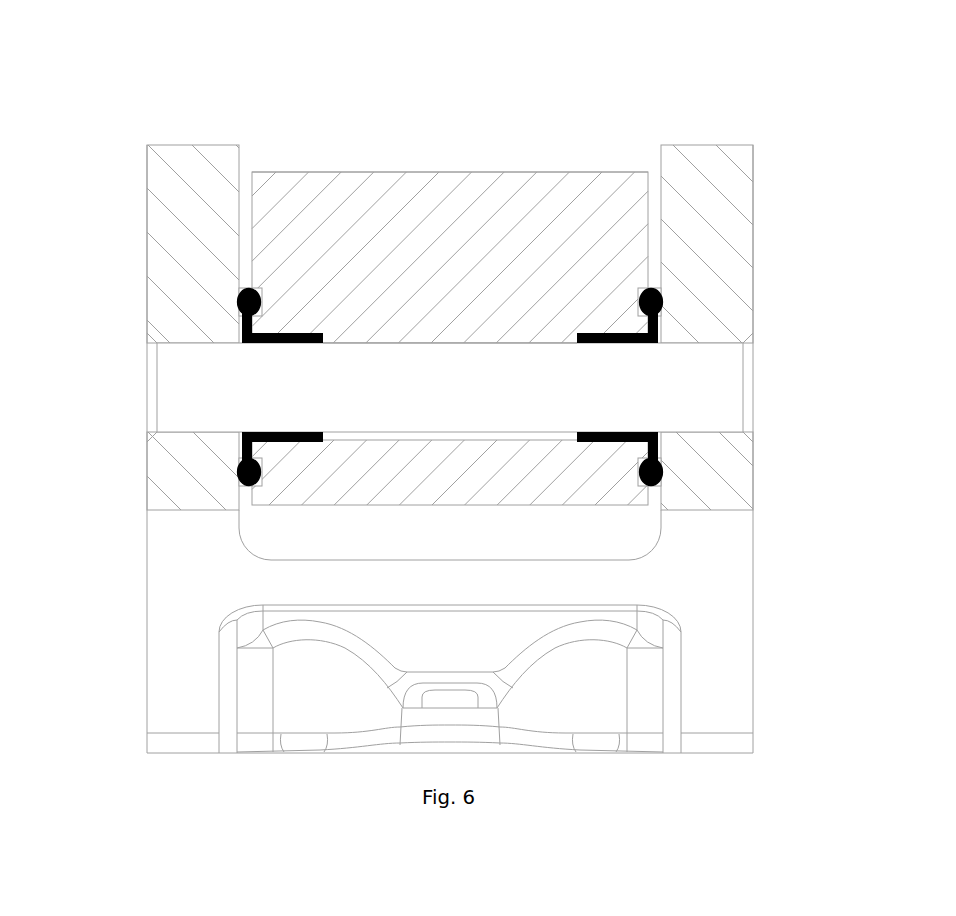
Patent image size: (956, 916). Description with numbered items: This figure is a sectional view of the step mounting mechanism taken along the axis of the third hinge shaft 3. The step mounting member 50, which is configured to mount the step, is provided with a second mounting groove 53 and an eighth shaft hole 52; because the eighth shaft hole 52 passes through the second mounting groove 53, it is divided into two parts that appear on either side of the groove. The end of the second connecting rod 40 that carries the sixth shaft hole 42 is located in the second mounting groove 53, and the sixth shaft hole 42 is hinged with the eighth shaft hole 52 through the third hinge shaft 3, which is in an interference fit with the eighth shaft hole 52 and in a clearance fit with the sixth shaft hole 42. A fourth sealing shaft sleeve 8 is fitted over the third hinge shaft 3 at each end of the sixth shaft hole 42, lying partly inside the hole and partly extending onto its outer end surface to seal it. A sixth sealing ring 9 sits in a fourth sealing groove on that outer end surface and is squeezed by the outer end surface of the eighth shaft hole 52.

The third hinge shaft 3 is at (705, 387).
The fourth sealing shaft sleeve 8 is at (240, 328).
The sixth sealing ring 9 is at (240, 297).
The second connecting rod 40 is at (338, 192).
The sixth shaft hole 42 is at (552, 340).
The step mounting member 50 is at (202, 610).
The eighth shaft hole 52 is at (190, 433).
The second mounting groove 53 is at (613, 155).